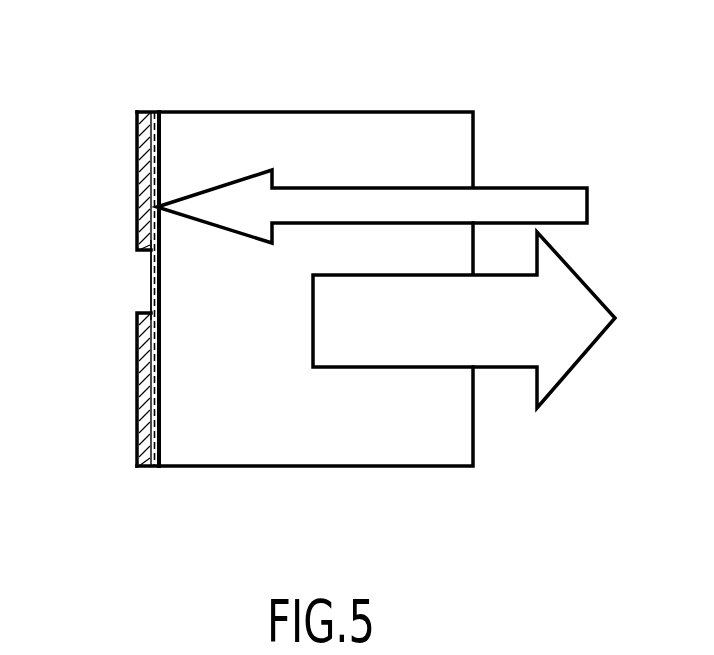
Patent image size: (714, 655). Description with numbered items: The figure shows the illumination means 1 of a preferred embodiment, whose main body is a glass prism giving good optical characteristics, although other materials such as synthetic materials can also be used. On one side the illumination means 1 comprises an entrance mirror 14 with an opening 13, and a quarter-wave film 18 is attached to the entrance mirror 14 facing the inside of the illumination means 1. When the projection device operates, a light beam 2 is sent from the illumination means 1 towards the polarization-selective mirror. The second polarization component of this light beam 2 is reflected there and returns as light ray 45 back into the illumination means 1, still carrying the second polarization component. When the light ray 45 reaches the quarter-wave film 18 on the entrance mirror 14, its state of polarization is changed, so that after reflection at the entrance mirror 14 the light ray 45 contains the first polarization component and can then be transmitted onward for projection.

The illumination means 1 is at (214, 104).
The light beam 2 is at (408, 343).
The opening 13 is at (152, 283).
The entrance mirror 14 is at (137, 414).
The quarter-wave film 18 is at (162, 413).
The light ray 45 is at (389, 200).